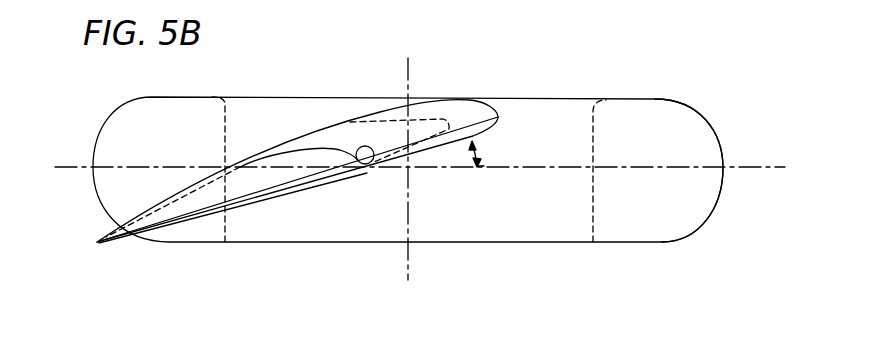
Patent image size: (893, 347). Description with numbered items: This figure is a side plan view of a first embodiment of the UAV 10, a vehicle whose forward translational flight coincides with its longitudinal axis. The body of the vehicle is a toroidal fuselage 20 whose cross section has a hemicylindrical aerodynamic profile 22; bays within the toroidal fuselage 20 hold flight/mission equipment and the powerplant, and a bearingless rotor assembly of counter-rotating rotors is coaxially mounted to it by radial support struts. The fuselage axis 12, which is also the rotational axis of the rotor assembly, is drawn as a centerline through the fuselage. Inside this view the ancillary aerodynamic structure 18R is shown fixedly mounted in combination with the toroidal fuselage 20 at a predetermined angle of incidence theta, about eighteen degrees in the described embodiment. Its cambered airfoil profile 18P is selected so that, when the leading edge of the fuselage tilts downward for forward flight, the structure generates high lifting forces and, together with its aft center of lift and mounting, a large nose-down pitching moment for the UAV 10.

The UAV 10 is at (622, 73).
The fuselage axis 12 is at (408, 263).
The ancillary aerodynamic structure 18R is at (348, 108).
The airfoil profile 18P is at (257, 203).
The toroidal fuselage 20 is at (716, 117).
The aerodynamic profile 22 is at (712, 207).